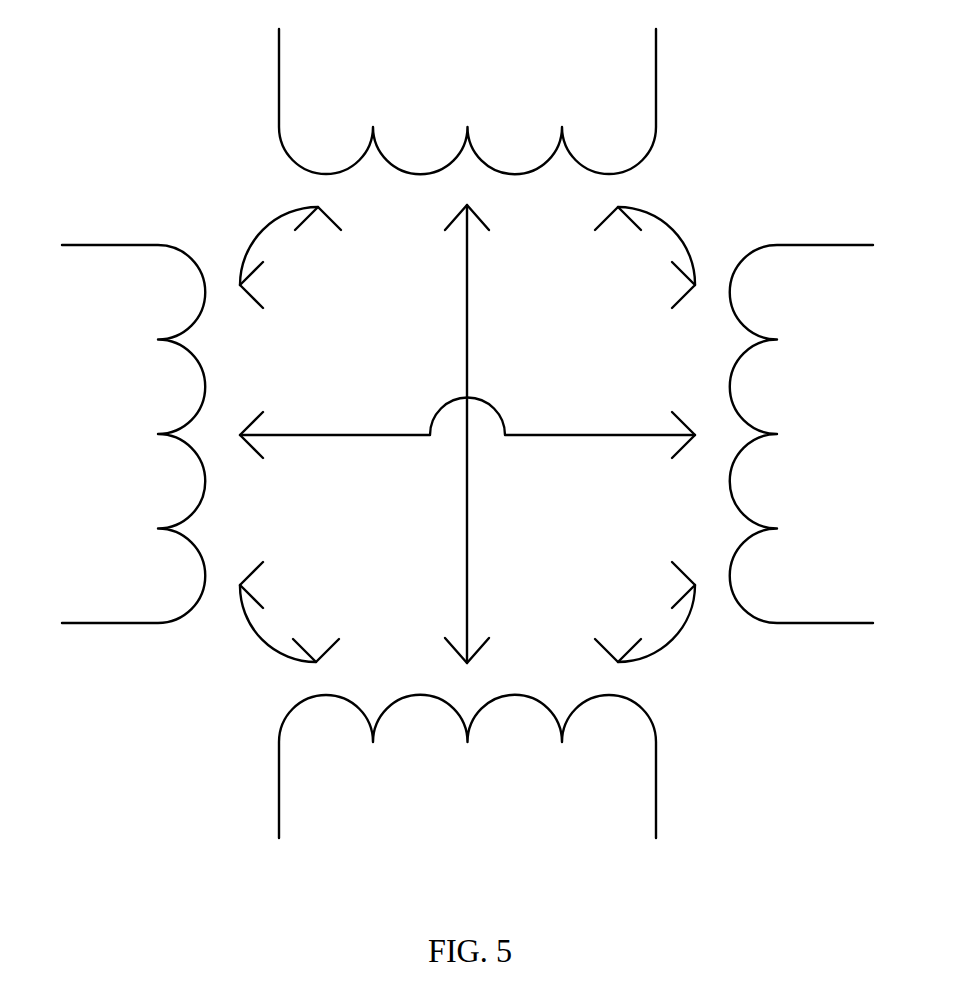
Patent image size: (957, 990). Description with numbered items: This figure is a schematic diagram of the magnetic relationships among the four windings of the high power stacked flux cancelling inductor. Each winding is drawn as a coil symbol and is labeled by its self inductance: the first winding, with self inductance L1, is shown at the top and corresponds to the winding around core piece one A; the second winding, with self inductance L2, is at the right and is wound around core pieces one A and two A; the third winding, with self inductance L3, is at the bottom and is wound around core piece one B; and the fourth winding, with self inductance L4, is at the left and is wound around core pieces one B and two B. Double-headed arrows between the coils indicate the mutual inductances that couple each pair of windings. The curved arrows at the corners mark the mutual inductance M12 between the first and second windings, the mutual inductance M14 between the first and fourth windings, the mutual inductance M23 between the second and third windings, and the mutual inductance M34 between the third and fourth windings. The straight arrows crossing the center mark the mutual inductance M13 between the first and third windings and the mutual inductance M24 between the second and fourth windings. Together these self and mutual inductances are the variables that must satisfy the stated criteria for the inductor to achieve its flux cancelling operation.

The self inductance of first winding L1 is at (467, 101).
The self inductance of second winding L2 is at (812, 434).
The self inductance of third winding L3 is at (467, 777).
The self inductance of fourth winding L4 is at (115, 434).
The mutual inductance between first and second windings M12 is at (682, 234).
The mutual inductance between first and third windings M13 is at (421, 434).
The mutual inductance between first and fourth windings M14 is at (265, 235).
The mutual inductance between second and third windings M23 is at (682, 644).
The mutual inductance between second and fourth windings M24 is at (467, 404).
The mutual inductance between third and fourth windings M34 is at (264, 637).